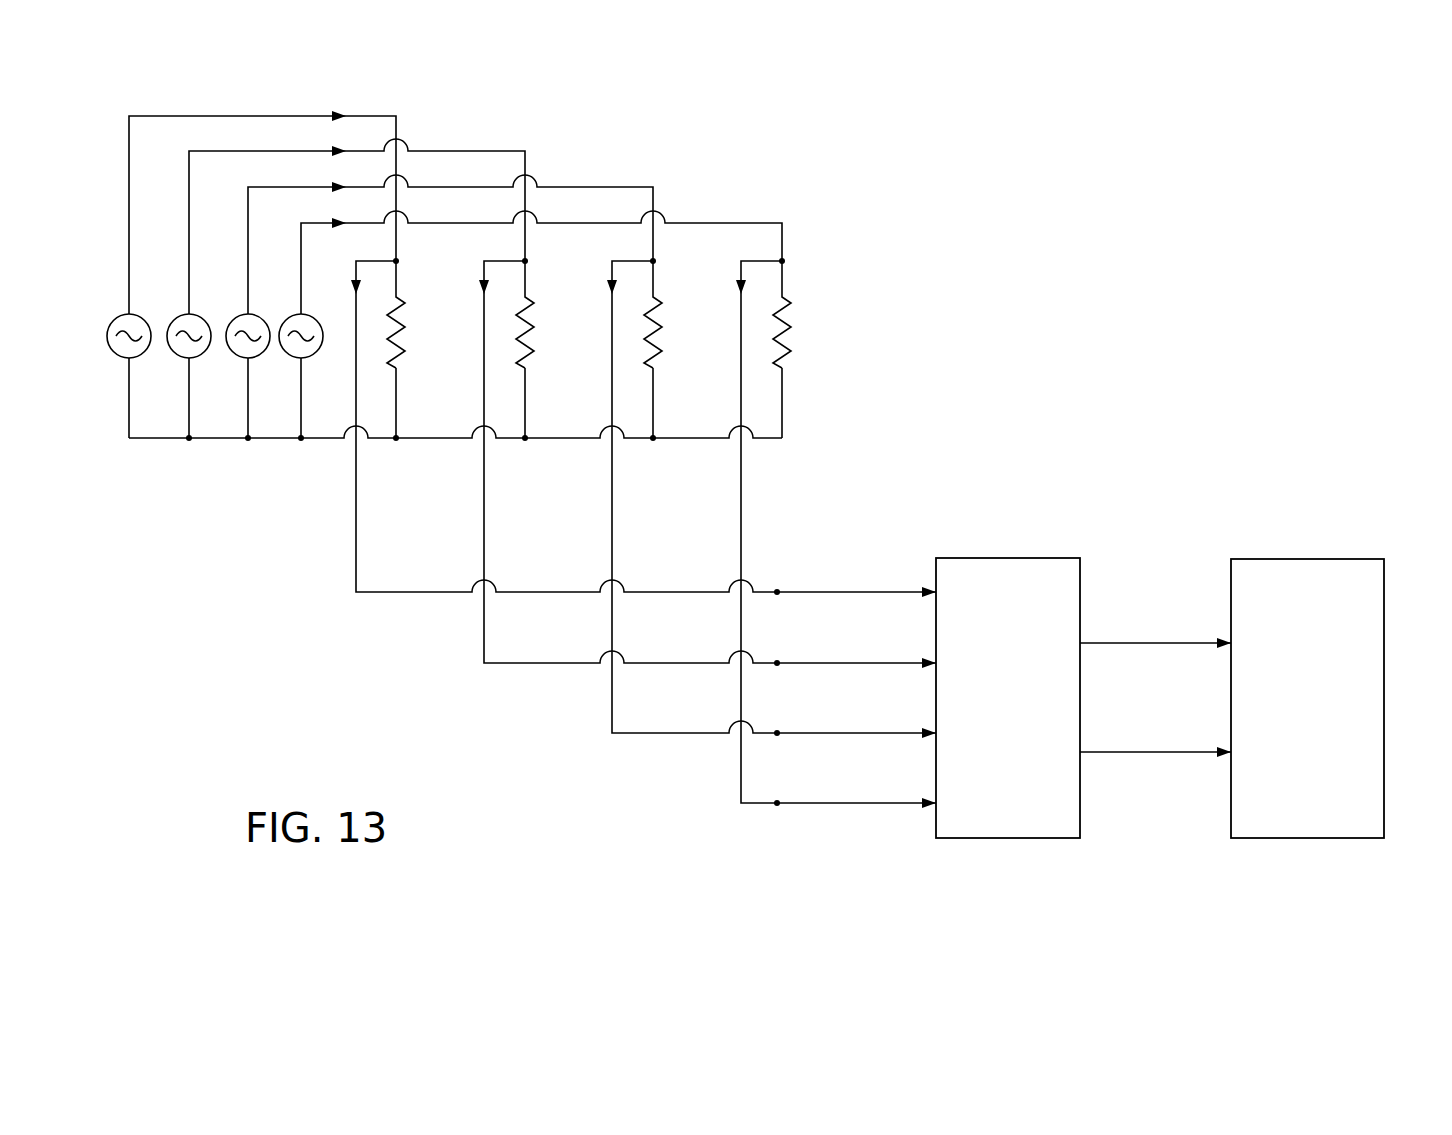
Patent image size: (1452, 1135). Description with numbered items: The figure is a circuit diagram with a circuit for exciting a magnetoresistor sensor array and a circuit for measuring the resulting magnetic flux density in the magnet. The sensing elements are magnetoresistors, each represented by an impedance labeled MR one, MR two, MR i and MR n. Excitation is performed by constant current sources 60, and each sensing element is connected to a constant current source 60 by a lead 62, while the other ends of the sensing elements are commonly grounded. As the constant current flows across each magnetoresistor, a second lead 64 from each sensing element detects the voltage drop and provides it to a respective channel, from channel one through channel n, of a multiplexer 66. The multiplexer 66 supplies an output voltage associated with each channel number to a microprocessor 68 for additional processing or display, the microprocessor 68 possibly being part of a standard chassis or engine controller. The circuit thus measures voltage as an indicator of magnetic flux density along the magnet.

The constant current source 60 is at (110, 351).
The lead 62 is at (368, 116).
The second lead 64 is at (356, 545).
The multiplexer 66 is at (1080, 817).
The microprocessor 68 is at (1384, 817).